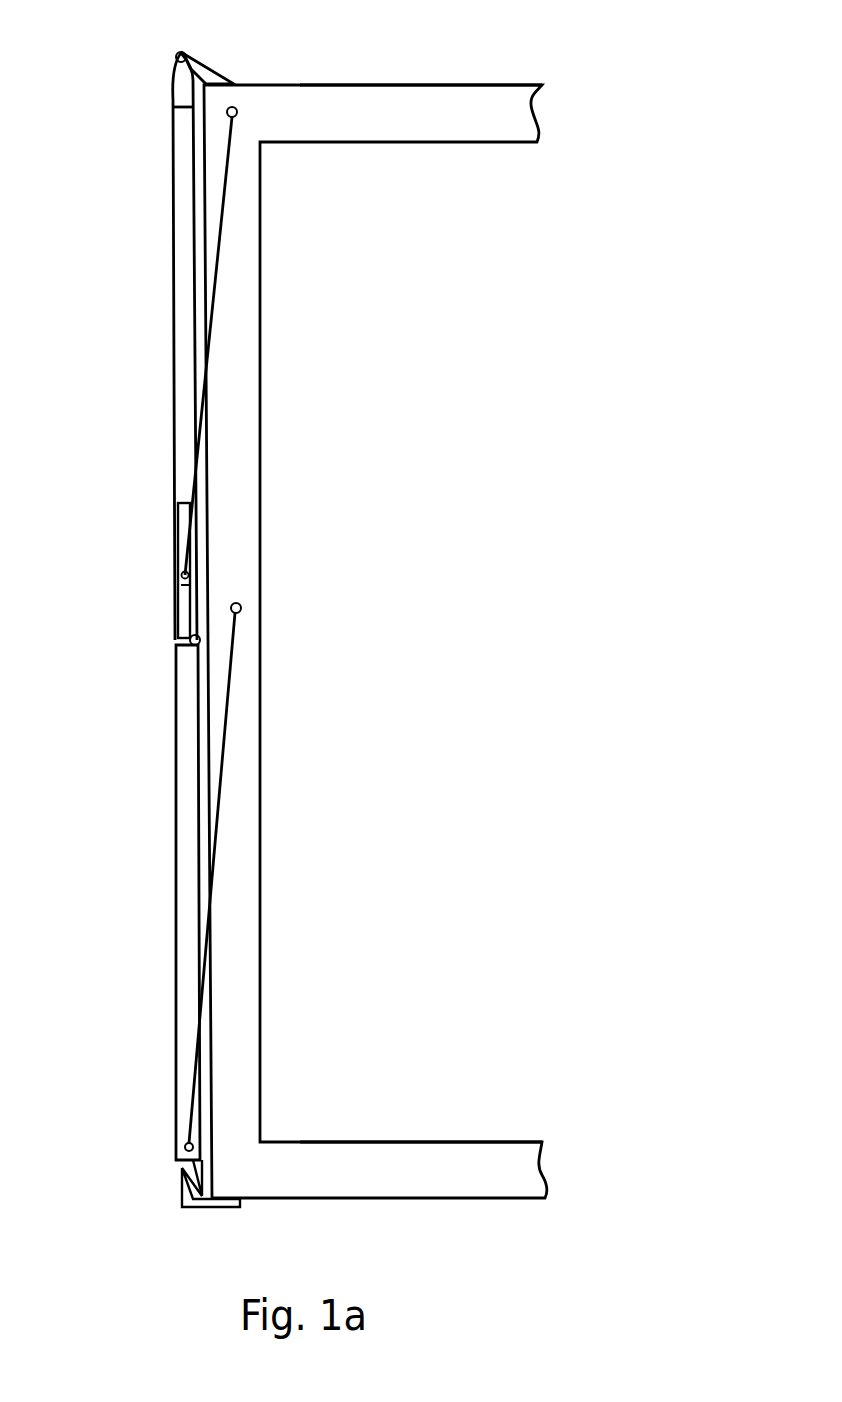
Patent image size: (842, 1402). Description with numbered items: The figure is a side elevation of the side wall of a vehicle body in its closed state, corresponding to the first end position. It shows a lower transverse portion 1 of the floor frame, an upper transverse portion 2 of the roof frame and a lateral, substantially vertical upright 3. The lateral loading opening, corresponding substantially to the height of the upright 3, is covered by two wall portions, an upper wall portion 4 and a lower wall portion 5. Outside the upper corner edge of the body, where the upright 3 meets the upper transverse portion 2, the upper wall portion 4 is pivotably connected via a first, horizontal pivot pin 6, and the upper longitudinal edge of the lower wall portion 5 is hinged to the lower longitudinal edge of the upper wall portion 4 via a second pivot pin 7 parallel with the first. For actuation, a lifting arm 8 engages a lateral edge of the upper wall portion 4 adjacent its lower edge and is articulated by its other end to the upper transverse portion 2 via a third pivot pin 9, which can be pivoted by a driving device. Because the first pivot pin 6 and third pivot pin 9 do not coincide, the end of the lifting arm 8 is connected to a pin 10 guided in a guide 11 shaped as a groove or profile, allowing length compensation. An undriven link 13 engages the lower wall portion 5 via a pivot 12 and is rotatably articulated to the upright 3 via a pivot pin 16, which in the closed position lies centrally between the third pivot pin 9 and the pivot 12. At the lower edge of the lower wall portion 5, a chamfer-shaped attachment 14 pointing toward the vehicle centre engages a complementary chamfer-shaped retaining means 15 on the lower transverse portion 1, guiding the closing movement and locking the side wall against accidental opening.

The lower transverse portion 1 is at (400, 1165).
The upper transverse portion 2 is at (395, 105).
The upright 3 is at (250, 835).
The upper wall portion 4 is at (183, 285).
The lower wall portion 5 is at (188, 806).
The first pivot pin 6 is at (176, 56).
The second pivot pin 7 is at (183, 640).
The lifting arm 8 is at (226, 208).
The third pivot pin 9 is at (234, 106).
The pin 10 is at (180, 567).
The guide 11 is at (187, 608).
The pivot 12 is at (183, 1145).
The undriven link 13 is at (225, 742).
The attachment 14 is at (198, 1172).
The retaining means 15 is at (185, 1207).
The pivot pin 16 is at (241, 607).